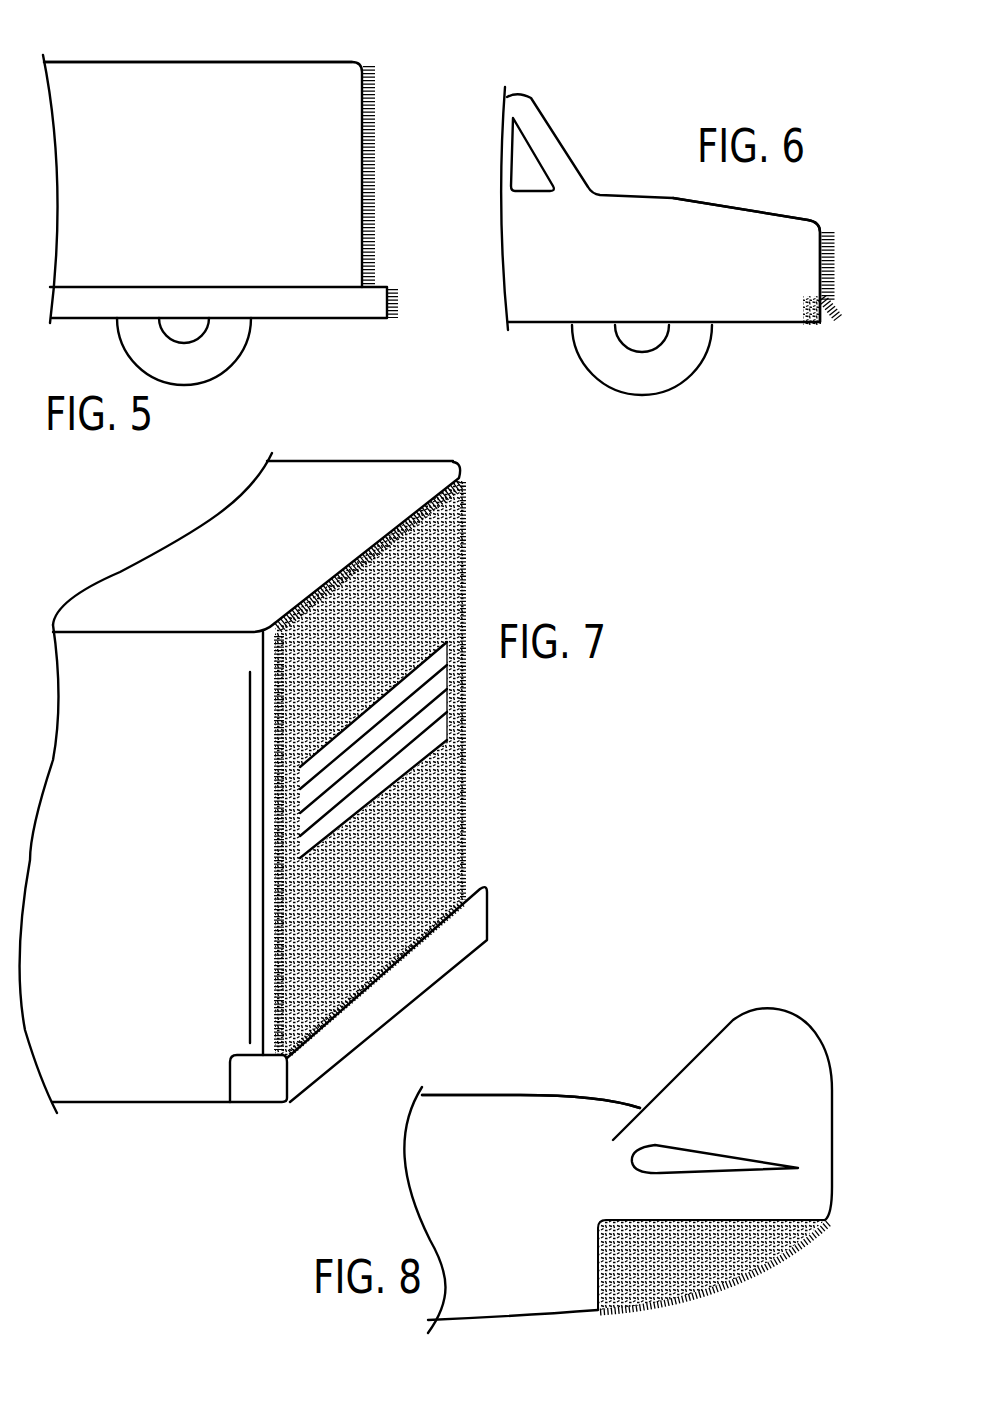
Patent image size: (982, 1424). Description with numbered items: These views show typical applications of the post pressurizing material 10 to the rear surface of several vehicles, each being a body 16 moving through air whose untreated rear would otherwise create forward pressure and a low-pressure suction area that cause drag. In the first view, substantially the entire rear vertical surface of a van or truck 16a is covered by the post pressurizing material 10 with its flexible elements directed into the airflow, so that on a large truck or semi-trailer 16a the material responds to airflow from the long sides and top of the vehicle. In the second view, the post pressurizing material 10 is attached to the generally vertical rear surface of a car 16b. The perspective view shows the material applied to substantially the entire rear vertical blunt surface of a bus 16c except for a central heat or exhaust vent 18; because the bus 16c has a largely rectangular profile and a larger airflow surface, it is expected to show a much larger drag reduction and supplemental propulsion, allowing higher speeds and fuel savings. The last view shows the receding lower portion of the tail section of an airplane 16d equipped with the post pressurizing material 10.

In FIG. 5, the post pressurizing material 10 is at (376, 167).
In FIG. 6, the post pressurizing material 10 is at (839, 315).
In FIG. 7, the post pressurizing material 10 is at (536, 542).
In FIG. 8, the post pressurizing material 10 is at (738, 1299).
In FIG. 5, the body 16 is at (302, 62).
In FIG. 6, the body 16 is at (630, 193).
In FIG. 7, the body 16 is at (323, 491).
In FIG. 8, the body 16 is at (580, 1093).
In FIG. 5, the van or truck 16a is at (230, 87).
In FIG. 6, the car 16b is at (767, 227).
In FIG. 7, the bus 16c is at (440, 473).
In FIG. 8, the airplane 16d is at (523, 1110).
In FIG. 7, the central heat or exhaust vent 18 is at (417, 717).